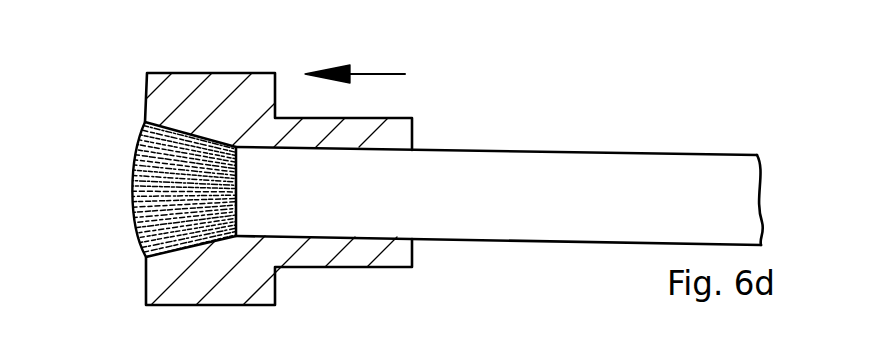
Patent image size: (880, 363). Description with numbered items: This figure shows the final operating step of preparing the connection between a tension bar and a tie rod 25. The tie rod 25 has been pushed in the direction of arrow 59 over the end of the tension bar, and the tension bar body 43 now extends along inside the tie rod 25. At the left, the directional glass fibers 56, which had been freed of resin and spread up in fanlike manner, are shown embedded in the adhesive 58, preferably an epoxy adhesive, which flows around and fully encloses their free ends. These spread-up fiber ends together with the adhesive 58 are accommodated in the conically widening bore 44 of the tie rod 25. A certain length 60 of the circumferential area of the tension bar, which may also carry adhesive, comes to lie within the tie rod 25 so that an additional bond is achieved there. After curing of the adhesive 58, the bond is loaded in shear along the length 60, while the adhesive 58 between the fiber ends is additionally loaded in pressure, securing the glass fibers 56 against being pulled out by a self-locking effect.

The tie rod 25 is at (403, 129).
The tube 43 is at (374, 228).
The conically widening bore 44 is at (212, 138).
The directional glass fibers 56 is at (142, 151).
The adhesive 58 is at (136, 160).
The arrow 59 is at (355, 61).
The length 60 is at (357, 151).